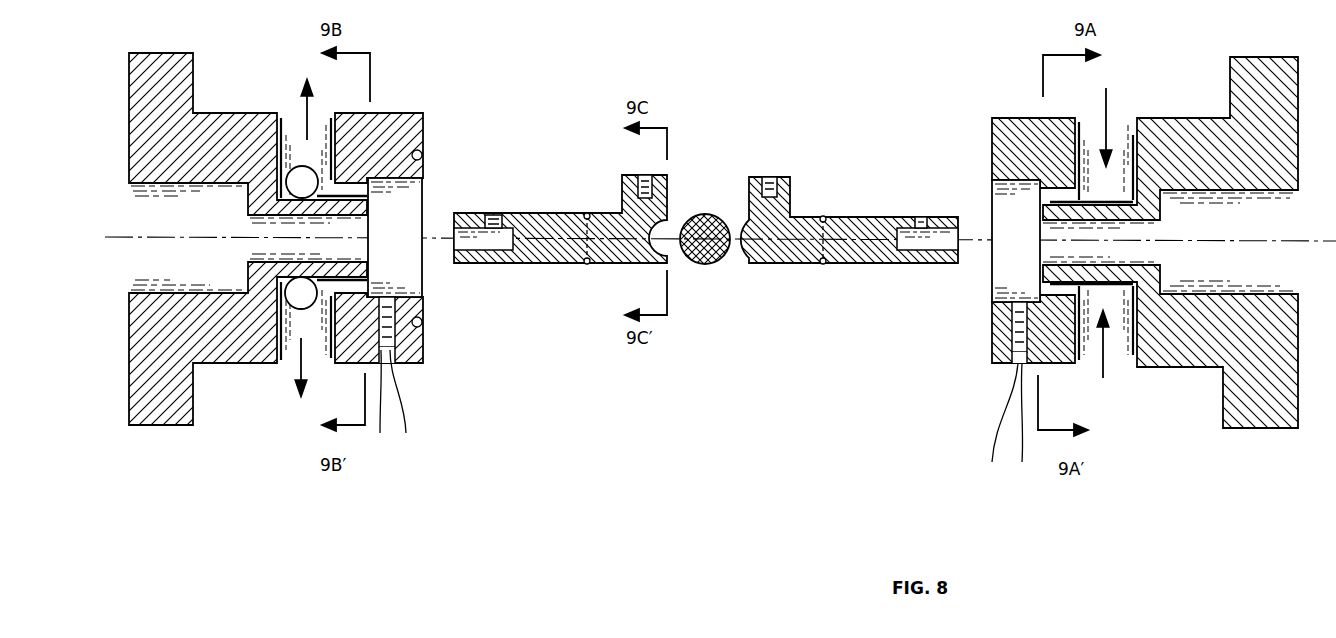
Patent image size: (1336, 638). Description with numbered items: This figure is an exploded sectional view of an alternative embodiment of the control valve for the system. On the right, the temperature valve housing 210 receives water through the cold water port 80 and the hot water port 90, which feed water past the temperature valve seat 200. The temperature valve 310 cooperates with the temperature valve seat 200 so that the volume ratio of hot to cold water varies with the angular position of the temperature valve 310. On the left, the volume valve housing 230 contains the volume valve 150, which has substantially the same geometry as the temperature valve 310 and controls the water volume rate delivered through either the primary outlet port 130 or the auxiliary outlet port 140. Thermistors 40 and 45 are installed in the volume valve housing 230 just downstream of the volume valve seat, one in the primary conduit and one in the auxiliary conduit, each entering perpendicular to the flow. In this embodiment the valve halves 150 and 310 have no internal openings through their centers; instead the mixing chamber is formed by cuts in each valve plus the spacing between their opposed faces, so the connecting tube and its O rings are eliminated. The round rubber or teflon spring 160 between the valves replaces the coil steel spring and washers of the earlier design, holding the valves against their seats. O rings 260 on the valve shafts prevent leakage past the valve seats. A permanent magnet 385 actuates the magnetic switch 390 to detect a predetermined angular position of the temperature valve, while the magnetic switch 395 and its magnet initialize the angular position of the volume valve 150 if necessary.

The thermistor 40 is at (300, 165).
The thermistor 45 is at (305, 310).
The cold water port 80 is at (1116, 94).
The hot water port 90 is at (1102, 380).
The outlet port 130 is at (322, 88).
The auxiliary outlet port 140 is at (311, 397).
The volume valve 150 is at (505, 214).
The spring 160 is at (706, 264).
The temperature valve seat 200 is at (587, 213).
The temperature valve housing 210 is at (1163, 368).
The volume valve housing 230 is at (247, 364).
The O ring 260 is at (824, 216).
The temperature valve 310 is at (897, 265).
The permanent magnet 385 is at (776, 177).
The magnetic switch 390 is at (1014, 376).
The magnetic switch 395 is at (393, 372).